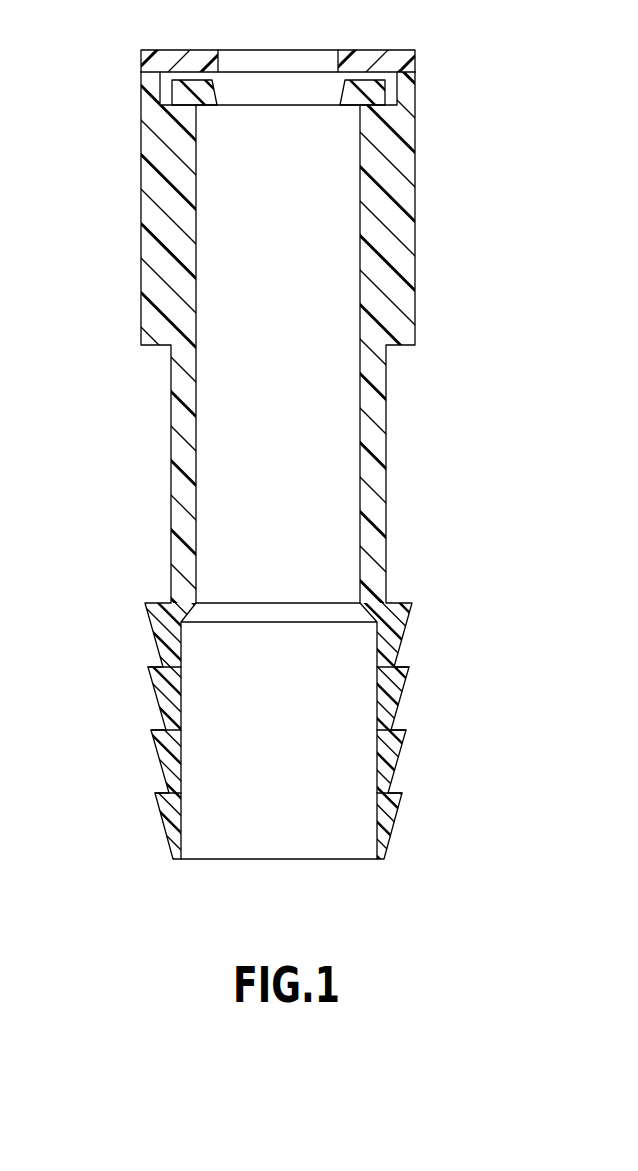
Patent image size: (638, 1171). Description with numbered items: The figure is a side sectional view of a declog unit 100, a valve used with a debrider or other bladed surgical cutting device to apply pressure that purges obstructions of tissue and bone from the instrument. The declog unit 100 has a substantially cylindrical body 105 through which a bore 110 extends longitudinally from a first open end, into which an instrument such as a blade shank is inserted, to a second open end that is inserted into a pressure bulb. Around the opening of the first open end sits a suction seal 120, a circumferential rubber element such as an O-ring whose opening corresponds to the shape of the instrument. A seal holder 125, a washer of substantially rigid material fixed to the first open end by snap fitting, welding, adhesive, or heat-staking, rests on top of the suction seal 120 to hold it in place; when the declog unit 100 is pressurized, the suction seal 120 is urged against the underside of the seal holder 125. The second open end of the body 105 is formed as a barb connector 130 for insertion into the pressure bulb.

The declog unit 100 is at (488, 107).
The body 105 is at (415, 303).
The bore 110 is at (238, 303).
The suction seal 120 is at (162, 88).
The seal holder 125 is at (182, 58).
The barb connector 130 is at (158, 772).